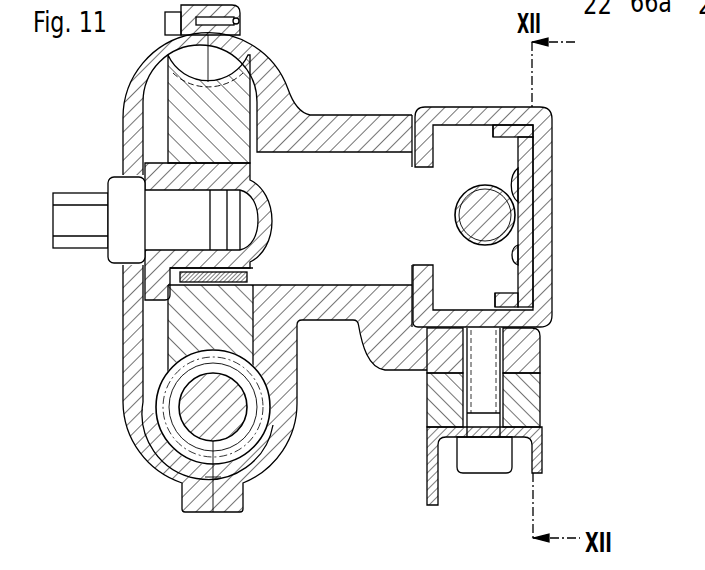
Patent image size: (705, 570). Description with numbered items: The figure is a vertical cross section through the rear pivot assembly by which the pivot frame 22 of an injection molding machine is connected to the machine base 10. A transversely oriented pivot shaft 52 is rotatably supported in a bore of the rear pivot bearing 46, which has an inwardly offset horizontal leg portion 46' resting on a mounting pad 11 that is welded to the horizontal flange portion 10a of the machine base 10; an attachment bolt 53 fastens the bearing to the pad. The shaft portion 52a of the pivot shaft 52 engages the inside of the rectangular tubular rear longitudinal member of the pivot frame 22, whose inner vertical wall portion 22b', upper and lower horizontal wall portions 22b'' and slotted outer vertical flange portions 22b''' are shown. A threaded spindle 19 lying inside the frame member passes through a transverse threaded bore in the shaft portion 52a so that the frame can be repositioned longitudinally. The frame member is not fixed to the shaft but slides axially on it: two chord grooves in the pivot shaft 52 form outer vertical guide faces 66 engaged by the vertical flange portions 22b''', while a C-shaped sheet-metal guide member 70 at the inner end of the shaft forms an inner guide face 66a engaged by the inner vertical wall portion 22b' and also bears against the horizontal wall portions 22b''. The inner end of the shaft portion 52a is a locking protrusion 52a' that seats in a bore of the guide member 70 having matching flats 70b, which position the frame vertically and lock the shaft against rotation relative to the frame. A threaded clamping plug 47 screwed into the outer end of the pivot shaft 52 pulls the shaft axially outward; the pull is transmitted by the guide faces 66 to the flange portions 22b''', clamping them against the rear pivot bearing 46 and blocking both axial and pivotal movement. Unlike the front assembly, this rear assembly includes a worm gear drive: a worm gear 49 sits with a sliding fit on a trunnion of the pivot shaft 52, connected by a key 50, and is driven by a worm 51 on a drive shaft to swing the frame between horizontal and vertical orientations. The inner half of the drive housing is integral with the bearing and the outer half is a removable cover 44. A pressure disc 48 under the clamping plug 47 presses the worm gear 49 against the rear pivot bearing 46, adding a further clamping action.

The machine base 10 is at (428, 470).
The horizontal flange portion 10a is at (435, 427).
The mounting pad 11 is at (528, 400).
The threaded spindle 19 is at (495, 217).
The pivot frame 22 is at (560, 132).
The inner vertical wall portion 22b' is at (588, 217).
The horizontal wall portion 22b'' is at (482, 86).
The vertical flange portion 22b''' is at (391, 274).
The removable cover 44 is at (135, 384).
The rear pivot bearing 46 is at (340, 251).
The horizontal leg portion 46' is at (520, 350).
The clamping plug 47 is at (127, 233).
The pressure disc 48 is at (158, 287).
The worm gear 49 is at (190, 335).
The key 50 is at (257, 270).
The worm 51 is at (205, 423).
The pivot shaft 52 is at (321, 177).
The shaft portion 52a is at (402, 111).
The locking protrusion 52a' is at (575, 184).
The attachment bolt 53 is at (488, 460).
The outer vertical guide face 66 is at (427, 267).
The inner guide face 66a is at (537, 160).
The guide member 70 is at (545, 123).
The flat 70b is at (513, 180).